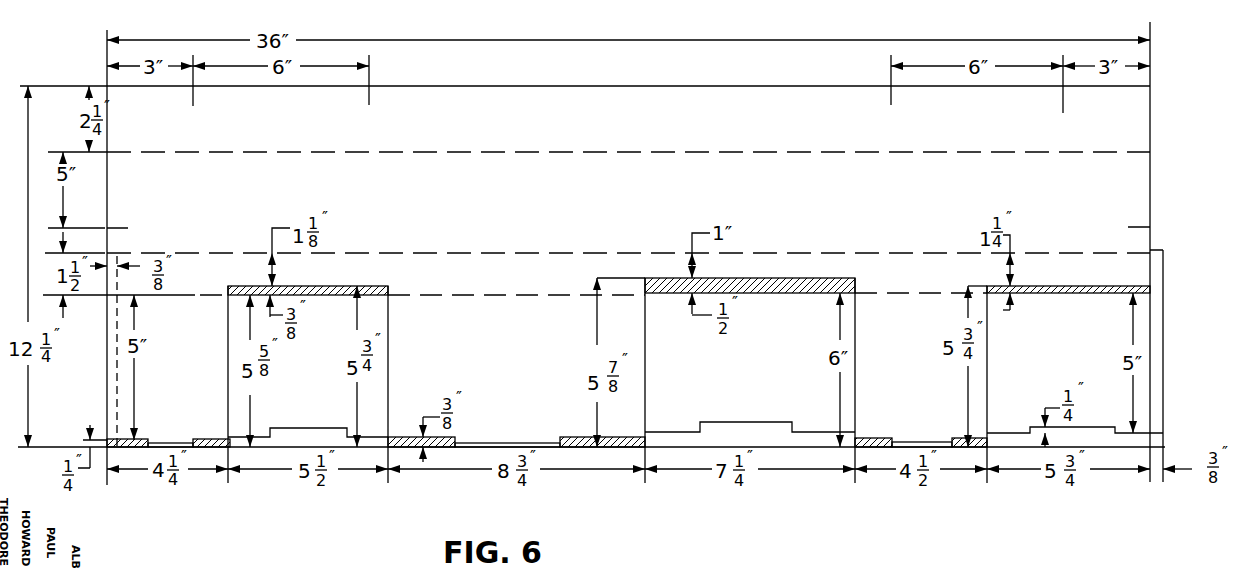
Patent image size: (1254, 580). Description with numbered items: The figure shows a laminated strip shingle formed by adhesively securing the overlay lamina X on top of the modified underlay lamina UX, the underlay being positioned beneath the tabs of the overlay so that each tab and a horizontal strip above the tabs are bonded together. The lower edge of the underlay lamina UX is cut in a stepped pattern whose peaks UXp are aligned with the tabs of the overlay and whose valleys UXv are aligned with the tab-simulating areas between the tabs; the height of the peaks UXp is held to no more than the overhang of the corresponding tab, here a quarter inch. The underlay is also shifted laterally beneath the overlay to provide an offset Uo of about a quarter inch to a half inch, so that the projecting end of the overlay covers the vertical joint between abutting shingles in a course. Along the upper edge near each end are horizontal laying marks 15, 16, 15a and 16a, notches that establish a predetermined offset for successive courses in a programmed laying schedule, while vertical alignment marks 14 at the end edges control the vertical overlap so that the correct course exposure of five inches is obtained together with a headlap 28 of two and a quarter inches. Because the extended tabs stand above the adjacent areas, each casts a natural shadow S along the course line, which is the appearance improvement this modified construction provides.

The vertical alignment marks 14 is at (126, 228).
The horizontal laying mark 15 is at (193, 100).
The horizontal laying mark 16 is at (369, 100).
The horizontal laying mark 15a is at (1063, 104).
The horizontal laying mark 16a is at (891, 100).
The headlap 28 is at (1138, 138).
The natural shadow S is at (345, 290).
The overlay lamina X is at (575, 217).
The modified underlay lamina UX is at (1140, 273).
The offset Uo is at (1165, 351).
The peaks UXp is at (215, 414).
The valleys UXv is at (318, 414).